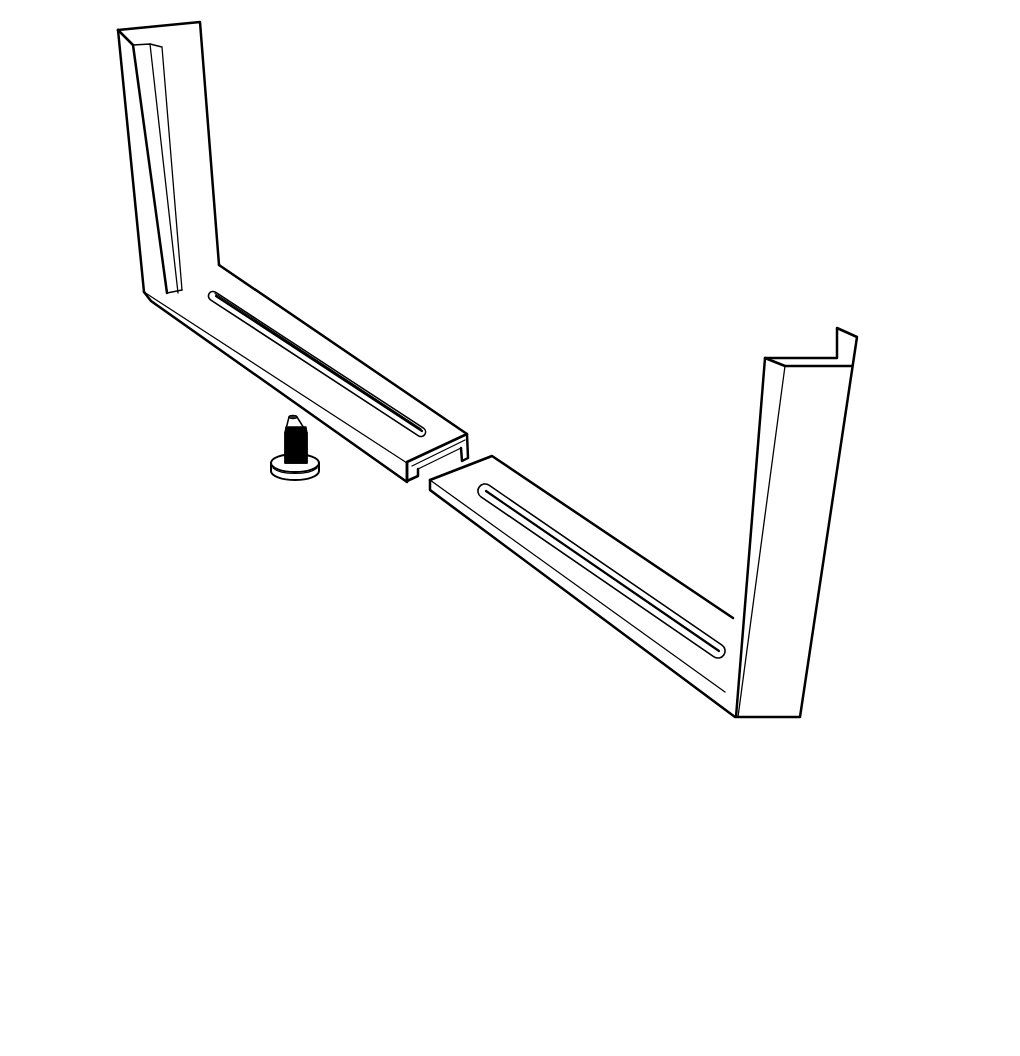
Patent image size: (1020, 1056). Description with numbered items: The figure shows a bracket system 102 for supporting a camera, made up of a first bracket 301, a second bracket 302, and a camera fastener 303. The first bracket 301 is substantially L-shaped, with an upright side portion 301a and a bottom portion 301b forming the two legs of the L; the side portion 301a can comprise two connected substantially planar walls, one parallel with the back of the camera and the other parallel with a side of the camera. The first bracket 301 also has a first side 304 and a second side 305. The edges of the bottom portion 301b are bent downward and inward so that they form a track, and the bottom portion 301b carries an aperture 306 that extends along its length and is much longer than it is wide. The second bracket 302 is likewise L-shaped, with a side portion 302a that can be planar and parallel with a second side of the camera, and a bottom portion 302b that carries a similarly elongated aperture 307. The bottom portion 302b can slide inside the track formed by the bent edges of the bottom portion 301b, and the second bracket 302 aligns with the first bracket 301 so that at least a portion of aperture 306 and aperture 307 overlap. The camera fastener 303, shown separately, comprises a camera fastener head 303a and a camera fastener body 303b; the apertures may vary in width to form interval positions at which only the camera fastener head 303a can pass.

The bracket system 102 is at (635, 102).
The first bracket 301 is at (238, 178).
The side portion 301a is at (205, 80).
The bottom portion 301b is at (283, 316).
The second bracket 302 is at (668, 397).
The side portion 302a is at (800, 357).
The bottom portion 302b is at (633, 642).
The camera fastener 303 is at (295, 483).
The camera fastener head 303a is at (283, 425).
The camera fastener body 303b is at (272, 472).
The first side 304 is at (363, 357).
The second side 305 is at (192, 313).
The aperture 306 is at (412, 414).
The aperture 307 is at (560, 528).